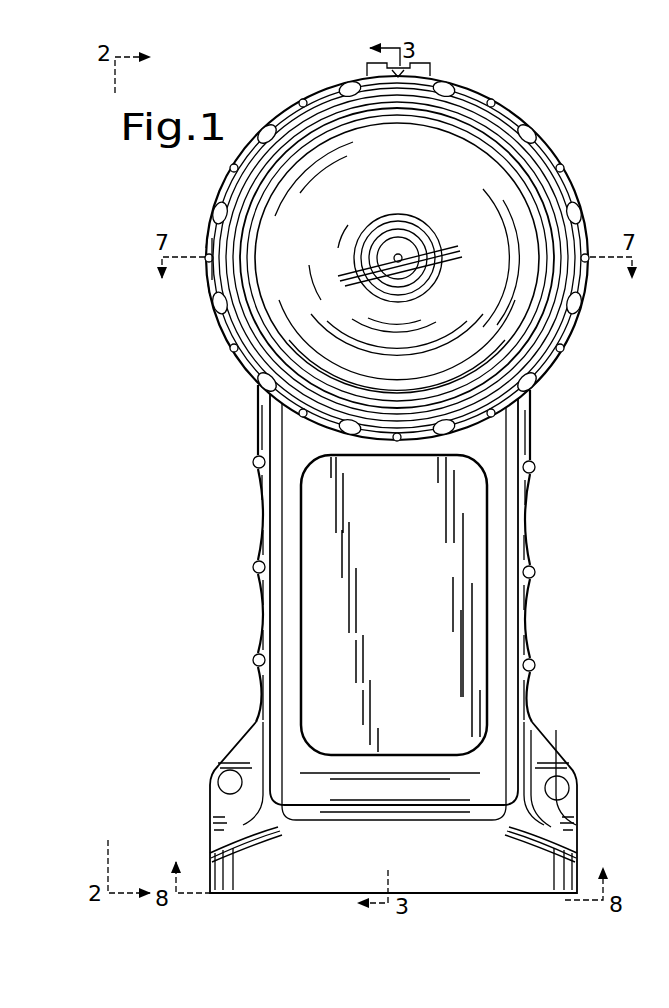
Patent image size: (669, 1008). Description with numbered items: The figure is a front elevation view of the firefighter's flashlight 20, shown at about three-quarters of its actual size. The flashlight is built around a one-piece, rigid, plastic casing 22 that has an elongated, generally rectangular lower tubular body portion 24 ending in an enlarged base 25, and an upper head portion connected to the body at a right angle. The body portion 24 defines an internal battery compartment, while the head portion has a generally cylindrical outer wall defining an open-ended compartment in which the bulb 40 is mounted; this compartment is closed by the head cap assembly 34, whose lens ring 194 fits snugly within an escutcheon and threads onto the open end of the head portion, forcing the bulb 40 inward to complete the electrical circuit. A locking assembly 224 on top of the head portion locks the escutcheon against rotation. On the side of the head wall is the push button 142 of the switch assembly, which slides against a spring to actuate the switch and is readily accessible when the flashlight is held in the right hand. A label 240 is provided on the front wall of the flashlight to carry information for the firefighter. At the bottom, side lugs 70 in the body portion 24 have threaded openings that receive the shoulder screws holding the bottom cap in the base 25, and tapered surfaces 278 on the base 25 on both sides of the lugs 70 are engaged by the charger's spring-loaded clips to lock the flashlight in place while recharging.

The flashlight 20 is at (392, 639).
The casing 22 is at (542, 433).
The lower tubular body portion 24 is at (274, 592).
The base 25 is at (410, 851).
The head cap assembly 34 is at (560, 139).
The bulb 40 is at (418, 243).
The side lugs 70 is at (214, 790).
The button 142 is at (208, 232).
The lens ring 194 is at (537, 210).
The locking assembly 224 is at (440, 70).
The label 240 is at (488, 510).
The tapered surfaces 278 is at (232, 840).